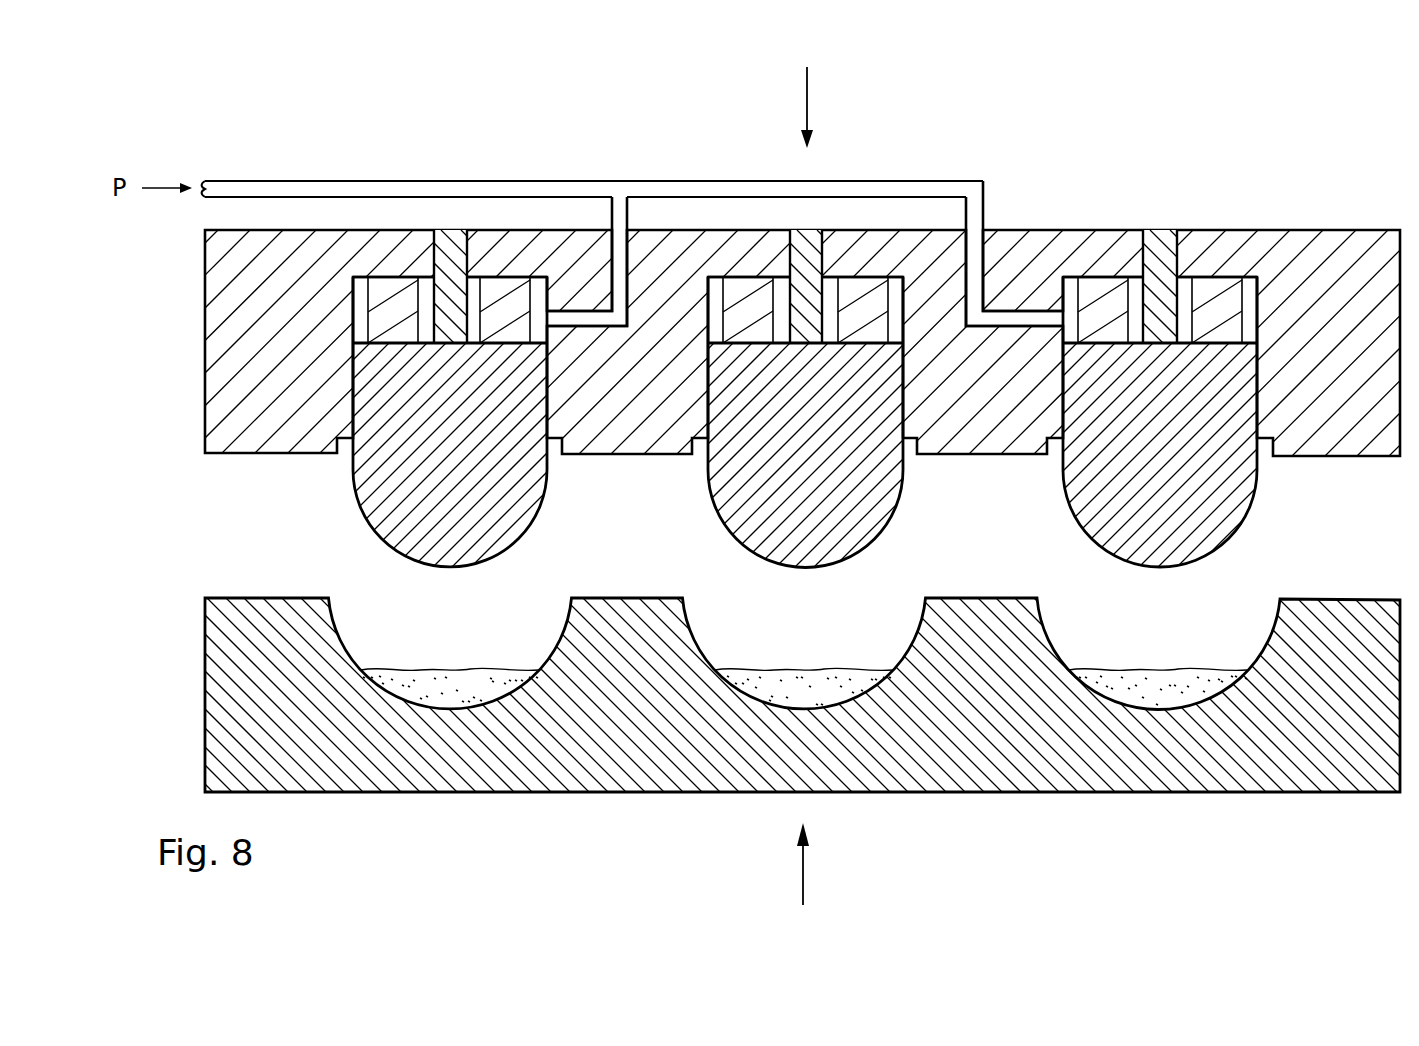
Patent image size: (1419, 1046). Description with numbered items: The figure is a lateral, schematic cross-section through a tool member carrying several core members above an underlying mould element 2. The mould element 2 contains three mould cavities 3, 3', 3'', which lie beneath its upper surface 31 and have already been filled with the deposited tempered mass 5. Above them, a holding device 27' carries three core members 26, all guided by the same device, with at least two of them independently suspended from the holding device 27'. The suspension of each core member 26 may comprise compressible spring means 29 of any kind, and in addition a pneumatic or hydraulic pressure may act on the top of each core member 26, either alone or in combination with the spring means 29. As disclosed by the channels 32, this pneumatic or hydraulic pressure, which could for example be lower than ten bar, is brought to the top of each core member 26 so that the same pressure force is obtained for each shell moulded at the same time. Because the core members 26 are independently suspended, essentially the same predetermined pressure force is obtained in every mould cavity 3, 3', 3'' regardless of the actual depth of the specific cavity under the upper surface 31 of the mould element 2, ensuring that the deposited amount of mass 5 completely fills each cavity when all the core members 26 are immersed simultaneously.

The mould element 2 is at (596, 762).
The mould cavity 3 is at (461, 610).
The mould cavity 3' is at (818, 610).
The mould cavity 3'' is at (1183, 610).
The tempered mass 5 is at (392, 672).
The core member 26 is at (384, 454).
The holding device 27' is at (709, 343).
The spring means 29 is at (942, 292).
The upper surface 31 is at (250, 599).
The channels 32 is at (496, 197).